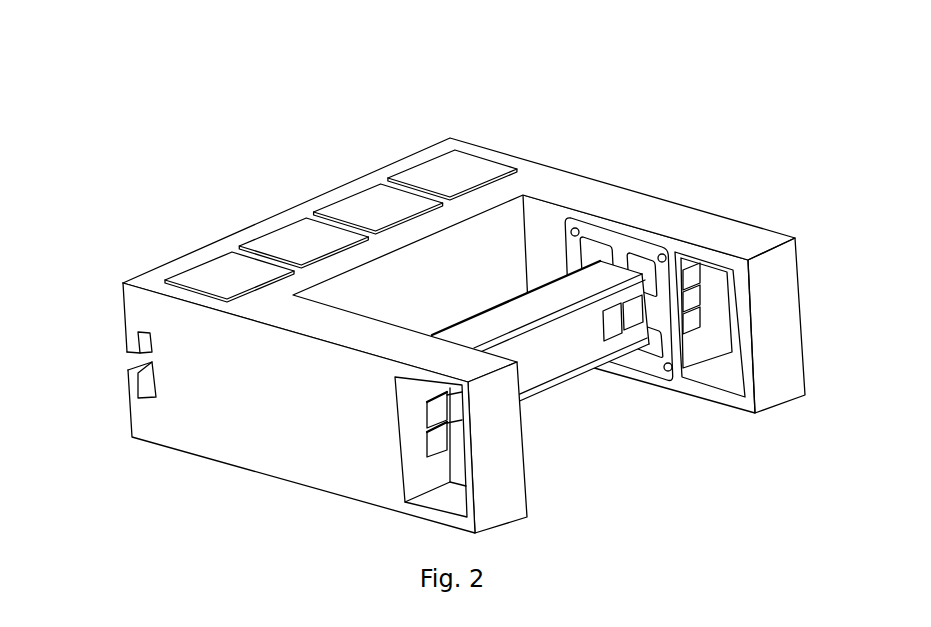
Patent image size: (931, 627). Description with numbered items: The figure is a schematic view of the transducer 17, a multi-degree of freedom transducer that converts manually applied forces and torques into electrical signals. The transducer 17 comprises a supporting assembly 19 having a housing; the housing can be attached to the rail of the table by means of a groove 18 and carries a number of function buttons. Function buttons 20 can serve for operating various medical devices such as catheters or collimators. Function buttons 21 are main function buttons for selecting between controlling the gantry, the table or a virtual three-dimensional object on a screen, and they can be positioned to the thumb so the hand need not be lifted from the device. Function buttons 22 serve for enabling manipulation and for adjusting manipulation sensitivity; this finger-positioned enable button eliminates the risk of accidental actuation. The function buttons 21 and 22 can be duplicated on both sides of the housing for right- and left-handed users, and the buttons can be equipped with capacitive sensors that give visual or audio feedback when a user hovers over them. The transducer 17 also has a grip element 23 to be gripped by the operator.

The transducer 17 is at (464, 315).
The groove 18 is at (128, 359).
The supporting assembly 19 is at (300, 205).
The function buttons 20 is at (455, 175).
The function buttons 21 is at (440, 442).
The function buttons 22 is at (633, 312).
The grip element 23 is at (597, 317).